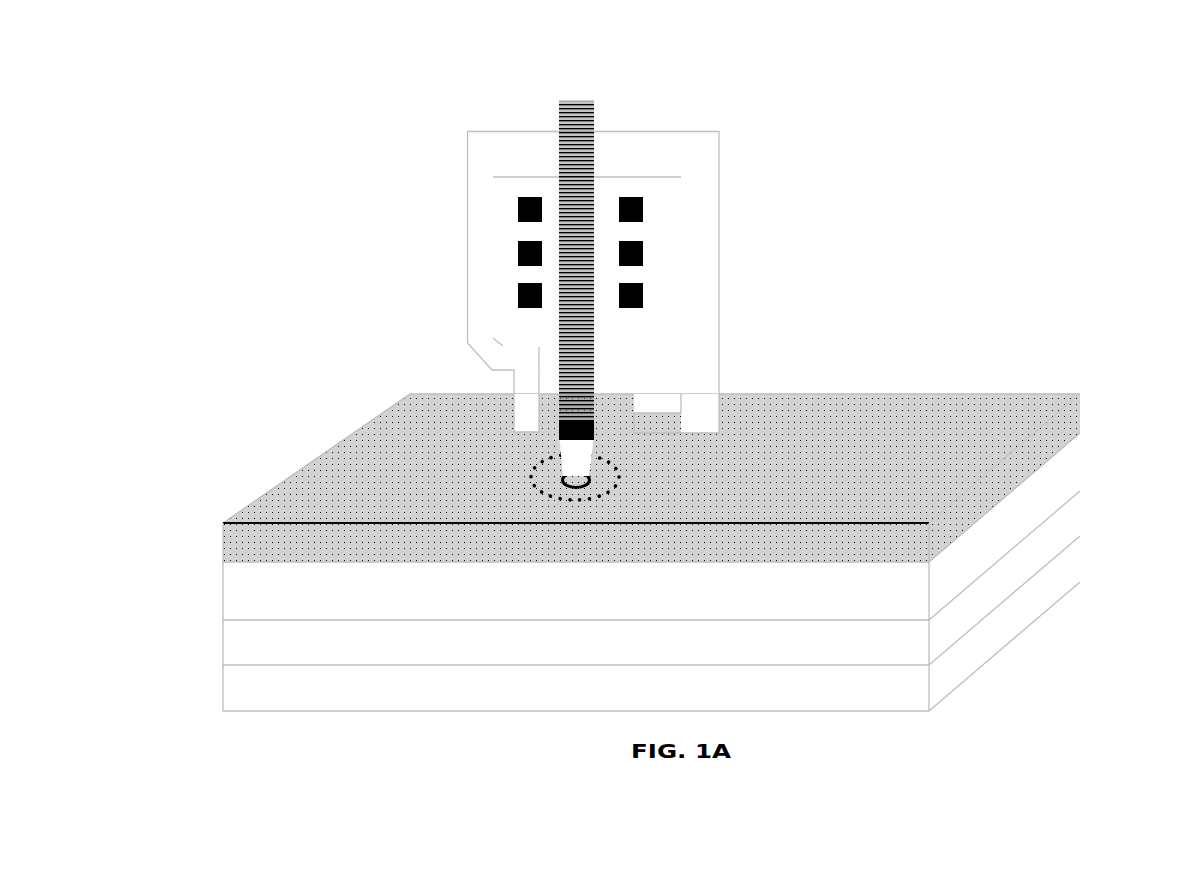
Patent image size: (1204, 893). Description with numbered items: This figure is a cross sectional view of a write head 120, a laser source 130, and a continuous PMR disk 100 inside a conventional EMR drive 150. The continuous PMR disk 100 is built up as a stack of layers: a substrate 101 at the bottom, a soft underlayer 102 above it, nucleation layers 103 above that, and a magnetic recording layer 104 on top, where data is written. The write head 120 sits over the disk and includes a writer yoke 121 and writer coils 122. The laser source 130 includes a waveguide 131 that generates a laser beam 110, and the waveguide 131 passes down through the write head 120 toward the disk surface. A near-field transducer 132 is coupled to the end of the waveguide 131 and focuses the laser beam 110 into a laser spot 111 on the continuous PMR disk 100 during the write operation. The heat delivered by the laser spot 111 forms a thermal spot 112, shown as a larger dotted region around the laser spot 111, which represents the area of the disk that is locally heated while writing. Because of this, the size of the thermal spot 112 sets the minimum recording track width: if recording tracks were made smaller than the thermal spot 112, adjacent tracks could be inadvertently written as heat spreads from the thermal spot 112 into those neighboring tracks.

The continuous PMR disk 100 is at (651, 458).
The substrate 101 is at (651, 646).
The soft underlayer 102 is at (651, 600).
The nucleation layers 103 is at (651, 555).
The magnetic recording layer 104 is at (651, 478).
The laser beam 110 is at (577, 463).
The laser spot 111 is at (587, 477).
The thermal spot 112 is at (531, 481).
The write head 120 is at (468, 147).
The writer yoke 121 is at (705, 185).
The writer coils 122 is at (518, 298).
The laser source 130 is at (571, 96).
The waveguide 131 is at (592, 115).
The near-field transducer 132 is at (597, 414).
The conventional EMR drive 150 is at (1048, 198).